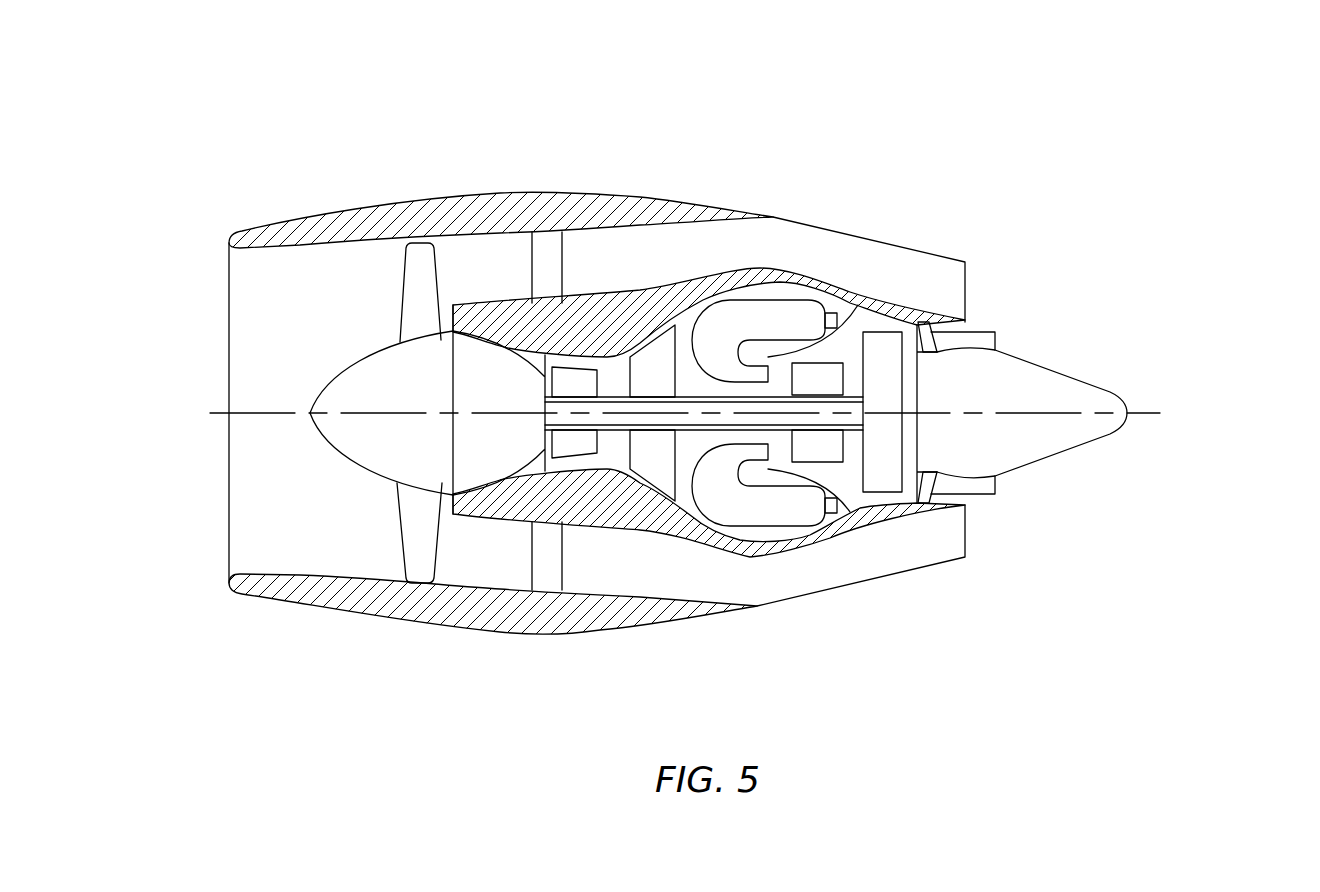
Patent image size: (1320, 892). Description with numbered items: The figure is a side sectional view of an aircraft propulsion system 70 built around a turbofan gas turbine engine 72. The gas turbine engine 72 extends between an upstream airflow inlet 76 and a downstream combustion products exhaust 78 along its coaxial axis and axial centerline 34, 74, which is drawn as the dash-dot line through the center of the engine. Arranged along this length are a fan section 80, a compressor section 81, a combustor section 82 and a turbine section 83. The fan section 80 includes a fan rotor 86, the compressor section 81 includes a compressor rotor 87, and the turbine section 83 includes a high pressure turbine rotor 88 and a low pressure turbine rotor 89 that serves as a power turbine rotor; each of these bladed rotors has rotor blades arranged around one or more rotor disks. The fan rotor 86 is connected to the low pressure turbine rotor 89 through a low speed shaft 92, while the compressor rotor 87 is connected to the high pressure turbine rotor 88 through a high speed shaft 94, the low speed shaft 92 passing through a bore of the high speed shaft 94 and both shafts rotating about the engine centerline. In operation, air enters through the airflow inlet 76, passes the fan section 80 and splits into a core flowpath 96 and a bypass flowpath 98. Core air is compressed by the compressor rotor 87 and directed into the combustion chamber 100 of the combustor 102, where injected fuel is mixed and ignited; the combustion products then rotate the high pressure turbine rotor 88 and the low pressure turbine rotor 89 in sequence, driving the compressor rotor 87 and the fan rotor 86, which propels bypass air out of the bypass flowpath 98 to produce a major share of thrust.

The aircraft propulsion system 70 is at (1035, 130).
The gas turbine engine 72 is at (893, 208).
The airflow inlet 76 is at (230, 303).
The combustion products exhaust 78 is at (997, 343).
The fan section 80 is at (360, 272).
The compressor section 81 is at (612, 375).
The combustor section 82 is at (753, 298).
The turbine section 83 is at (884, 330).
The fan rotor 86 is at (353, 463).
The compressor rotor 87 is at (650, 492).
The high pressure turbine rotor 88 is at (845, 450).
The low pressure turbine rotor 89 is at (903, 435).
The low speed shaft 92 is at (543, 421).
The high speed shaft 94 is at (690, 395).
The core flowpath 96 is at (947, 336).
The bypass flowpath 98 is at (490, 279).
The combustion chamber 100 is at (782, 515).
The combustor 102 is at (740, 527).
The central axis 34, 74 is at (1153, 410).